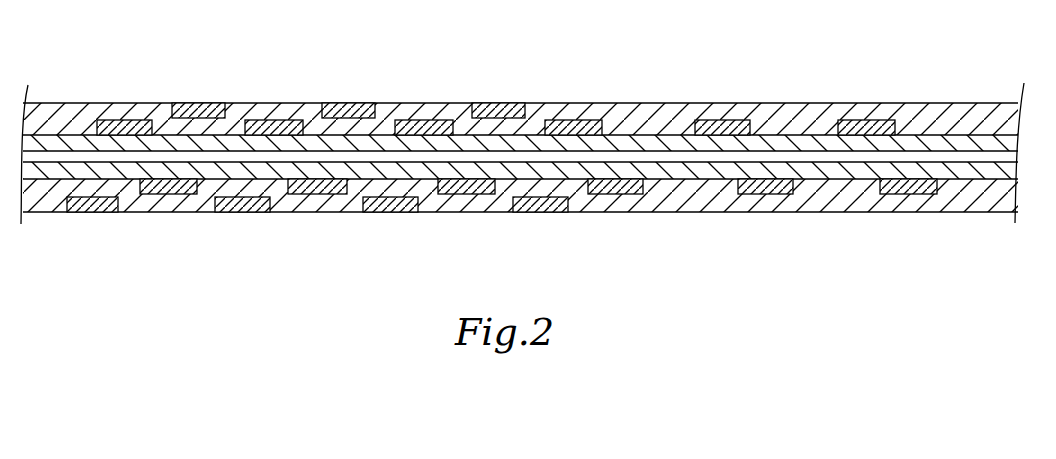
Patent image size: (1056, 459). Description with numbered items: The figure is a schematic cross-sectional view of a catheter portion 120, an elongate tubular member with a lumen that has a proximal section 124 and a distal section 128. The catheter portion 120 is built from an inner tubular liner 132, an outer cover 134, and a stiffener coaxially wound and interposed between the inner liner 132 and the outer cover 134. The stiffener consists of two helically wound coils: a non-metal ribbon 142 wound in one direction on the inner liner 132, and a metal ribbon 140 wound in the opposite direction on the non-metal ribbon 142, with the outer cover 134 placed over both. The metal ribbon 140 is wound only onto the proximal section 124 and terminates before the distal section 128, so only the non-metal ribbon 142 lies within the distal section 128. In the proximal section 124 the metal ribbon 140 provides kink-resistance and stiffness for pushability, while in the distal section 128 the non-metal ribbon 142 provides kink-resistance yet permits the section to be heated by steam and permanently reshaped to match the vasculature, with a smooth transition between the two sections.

The catheter portion 120 is at (749, 232).
The proximal section 124 is at (537, 40).
The distal section 128 is at (1027, 40).
The inner tubular liner 132 is at (827, 176).
The outer cover 134 is at (167, 212).
The metal ribbon 140 is at (200, 103).
The non-metal ribbon 142 is at (445, 121).